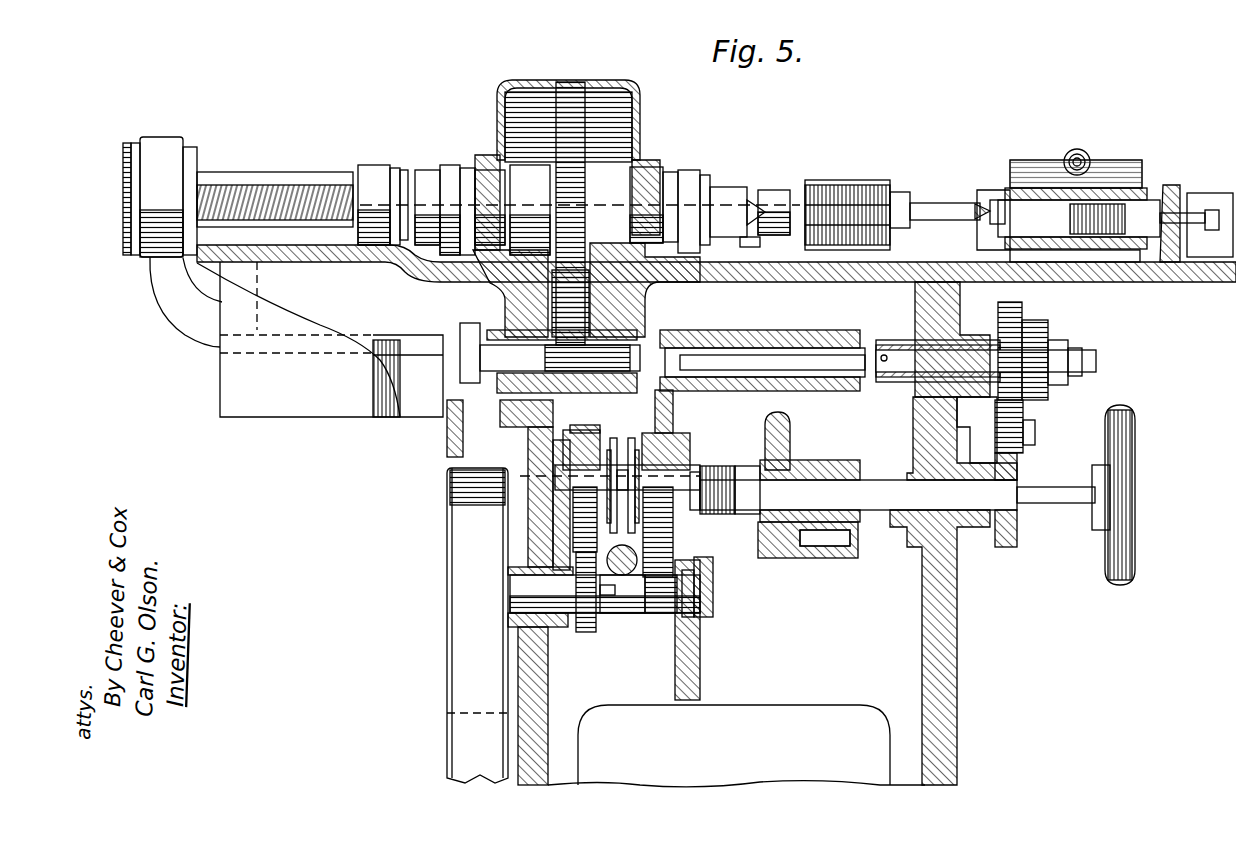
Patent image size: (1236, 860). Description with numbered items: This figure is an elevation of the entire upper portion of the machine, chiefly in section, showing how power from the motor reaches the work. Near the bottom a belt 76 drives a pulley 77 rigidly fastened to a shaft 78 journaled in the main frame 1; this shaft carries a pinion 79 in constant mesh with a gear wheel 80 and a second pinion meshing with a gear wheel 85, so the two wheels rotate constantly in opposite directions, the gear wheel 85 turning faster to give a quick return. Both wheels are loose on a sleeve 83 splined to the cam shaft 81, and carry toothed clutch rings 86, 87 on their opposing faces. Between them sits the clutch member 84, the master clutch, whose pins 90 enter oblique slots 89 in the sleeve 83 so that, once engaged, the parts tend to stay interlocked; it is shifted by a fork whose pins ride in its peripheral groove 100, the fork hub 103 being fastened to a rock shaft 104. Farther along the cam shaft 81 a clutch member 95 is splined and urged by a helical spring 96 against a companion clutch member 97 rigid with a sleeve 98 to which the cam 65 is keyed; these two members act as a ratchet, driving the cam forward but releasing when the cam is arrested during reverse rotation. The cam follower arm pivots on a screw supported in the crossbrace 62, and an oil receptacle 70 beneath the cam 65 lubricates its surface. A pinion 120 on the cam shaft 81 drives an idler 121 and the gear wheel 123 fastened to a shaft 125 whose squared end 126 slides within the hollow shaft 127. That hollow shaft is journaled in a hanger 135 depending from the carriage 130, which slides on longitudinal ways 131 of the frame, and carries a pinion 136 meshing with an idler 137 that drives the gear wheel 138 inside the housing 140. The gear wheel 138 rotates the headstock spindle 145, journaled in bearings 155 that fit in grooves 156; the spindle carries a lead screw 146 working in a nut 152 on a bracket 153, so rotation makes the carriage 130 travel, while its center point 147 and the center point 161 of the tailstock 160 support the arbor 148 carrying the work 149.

The main frame 1 is at (545, 695).
The crossbrace 62 is at (765, 425).
The cam 65 is at (825, 468).
The oil receptacle 70 is at (800, 545).
The belt 76 is at (447, 745).
The pulley 77 is at (447, 627).
The shaft 78 is at (618, 613).
The pinion 79 is at (660, 613).
The gear wheel 80 is at (637, 560).
The cam shaft 81 is at (968, 503).
The sleeve 83 is at (575, 455).
The clutch member 84 is at (573, 527).
The gear wheel 85 is at (585, 500).
The clutch ring 86 is at (660, 425).
The clutch ring 87 is at (622, 475).
The oblique slots 89 is at (625, 603).
The pins 90 is at (627, 521).
The clutch member 95 is at (718, 466).
The helical spring 96 is at (705, 505).
The clutch member 97 is at (745, 466).
The sleeve 98 is at (810, 460).
The peripheral groove 100 is at (575, 630).
The hub 103 is at (713, 580).
The rock shaft 104 is at (694, 575).
The pinion 120 is at (1017, 537).
The idler 121 is at (1030, 440).
The gear wheel 123 is at (1022, 310).
The shaft 125 is at (910, 355).
The squared end 126 is at (728, 345).
The hollow shaft 127 is at (810, 345).
The carriage 130 is at (330, 255).
The longitudinal ways 131 is at (385, 340).
The hanger 135 is at (630, 395).
The pinion 136 is at (575, 372).
The idler 137 is at (540, 325).
The gear wheel 138 is at (585, 140).
The housing 140 is at (497, 100).
The headstock spindle 145 is at (412, 168).
The lead screw 146 is at (290, 190).
The center point 147 is at (758, 210).
The arbor 148 is at (775, 210).
The work 149 is at (865, 180).
The nut 152 is at (160, 168).
The bracket 153 is at (180, 320).
The bearings 155 is at (448, 165).
The grooves 156 is at (715, 173).
The tailstock 160 is at (1040, 200).
The center point 161 is at (993, 205).